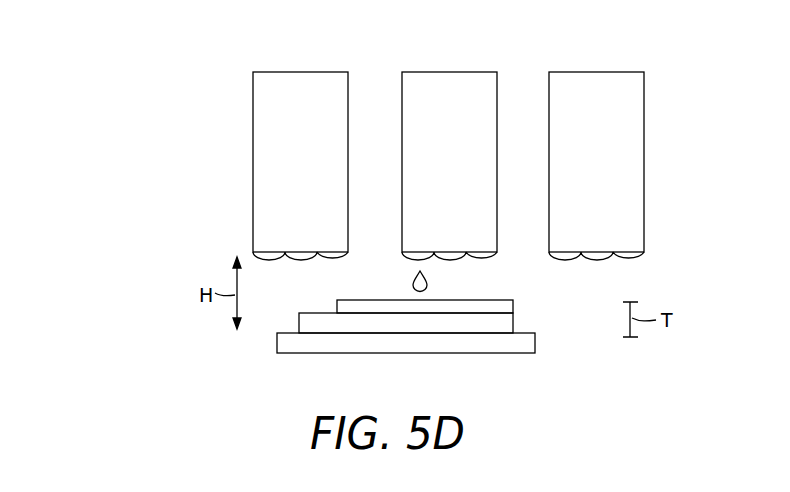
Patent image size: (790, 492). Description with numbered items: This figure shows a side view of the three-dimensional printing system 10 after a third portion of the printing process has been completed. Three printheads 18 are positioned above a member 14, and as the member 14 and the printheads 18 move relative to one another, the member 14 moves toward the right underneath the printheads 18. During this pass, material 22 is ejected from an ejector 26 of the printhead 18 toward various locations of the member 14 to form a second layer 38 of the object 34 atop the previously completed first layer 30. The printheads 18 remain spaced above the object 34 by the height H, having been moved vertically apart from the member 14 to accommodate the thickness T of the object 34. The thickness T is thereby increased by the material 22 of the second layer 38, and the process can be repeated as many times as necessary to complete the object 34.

The three-dimensional printing system 10 is at (182, 115).
The printhead 18 is at (298, 86).
The ejector 26 is at (410, 260).
The material 22 is at (428, 283).
The second layer 38 is at (498, 304).
The first layer 30 is at (514, 325).
The member 14 is at (393, 347).
The object 34 is at (288, 317).